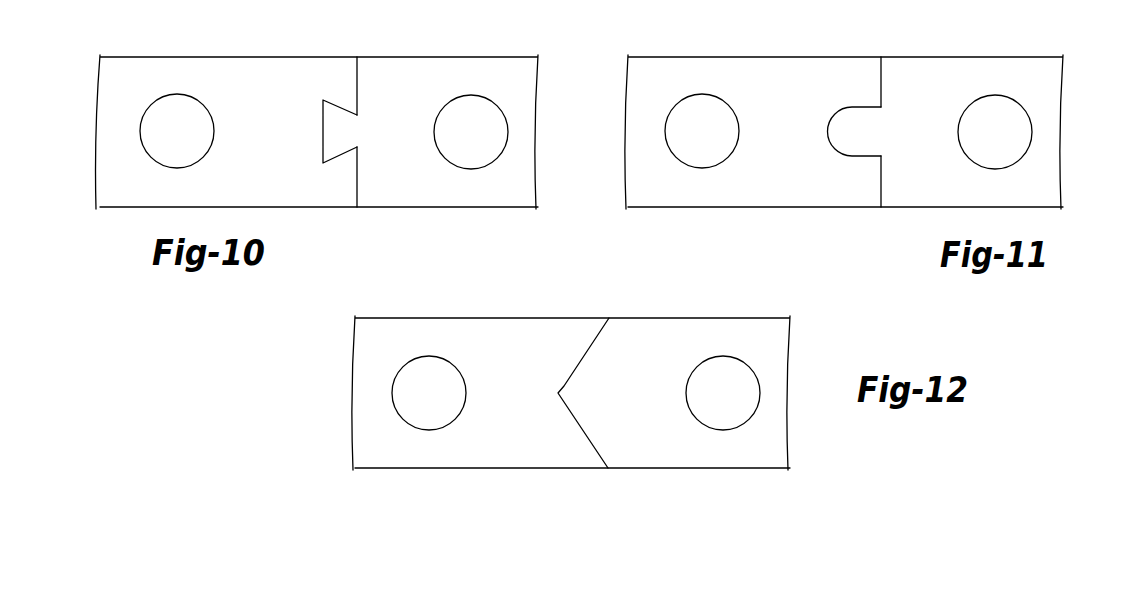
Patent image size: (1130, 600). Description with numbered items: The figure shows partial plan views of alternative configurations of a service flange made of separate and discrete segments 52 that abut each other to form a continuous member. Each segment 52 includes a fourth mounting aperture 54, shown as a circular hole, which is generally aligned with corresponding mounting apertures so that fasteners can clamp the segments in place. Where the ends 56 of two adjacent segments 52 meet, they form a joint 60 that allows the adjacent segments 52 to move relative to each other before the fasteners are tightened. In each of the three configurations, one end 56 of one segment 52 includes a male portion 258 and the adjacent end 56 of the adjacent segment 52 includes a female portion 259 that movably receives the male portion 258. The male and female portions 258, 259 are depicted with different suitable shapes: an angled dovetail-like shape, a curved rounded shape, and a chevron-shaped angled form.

In FIG. 10, the segment 52 is at (124, 62).
In FIG. 11, the segment 52 is at (658, 62).
In FIG. 12, the segment 52 is at (433, 320).
In FIG. 10, the fourth mounting aperture 54 is at (140, 135).
In FIG. 11, the fourth mounting aperture 54 is at (665, 129).
In FIG. 12, the fourth mounting aperture 54 is at (392, 395).
In FIG. 10, the end 56 is at (344, 72).
In FIG. 11, the end 56 is at (865, 63).
In FIG. 12, the end 56 is at (583, 326).
In FIG. 10, the joint 60 is at (364, 72).
In FIG. 11, the joint 60 is at (890, 84).
In FIG. 12, the joint 60 is at (582, 436).
In FIG. 10, the male portion 258 is at (337, 126).
In FIG. 11, the male portion 258 is at (863, 125).
In FIG. 12, the male portion 258 is at (582, 383).
In FIG. 10, the female portion 259 is at (323, 135).
In FIG. 11, the female portion 259 is at (829, 132).
In FIG. 12, the female portion 259 is at (584, 432).